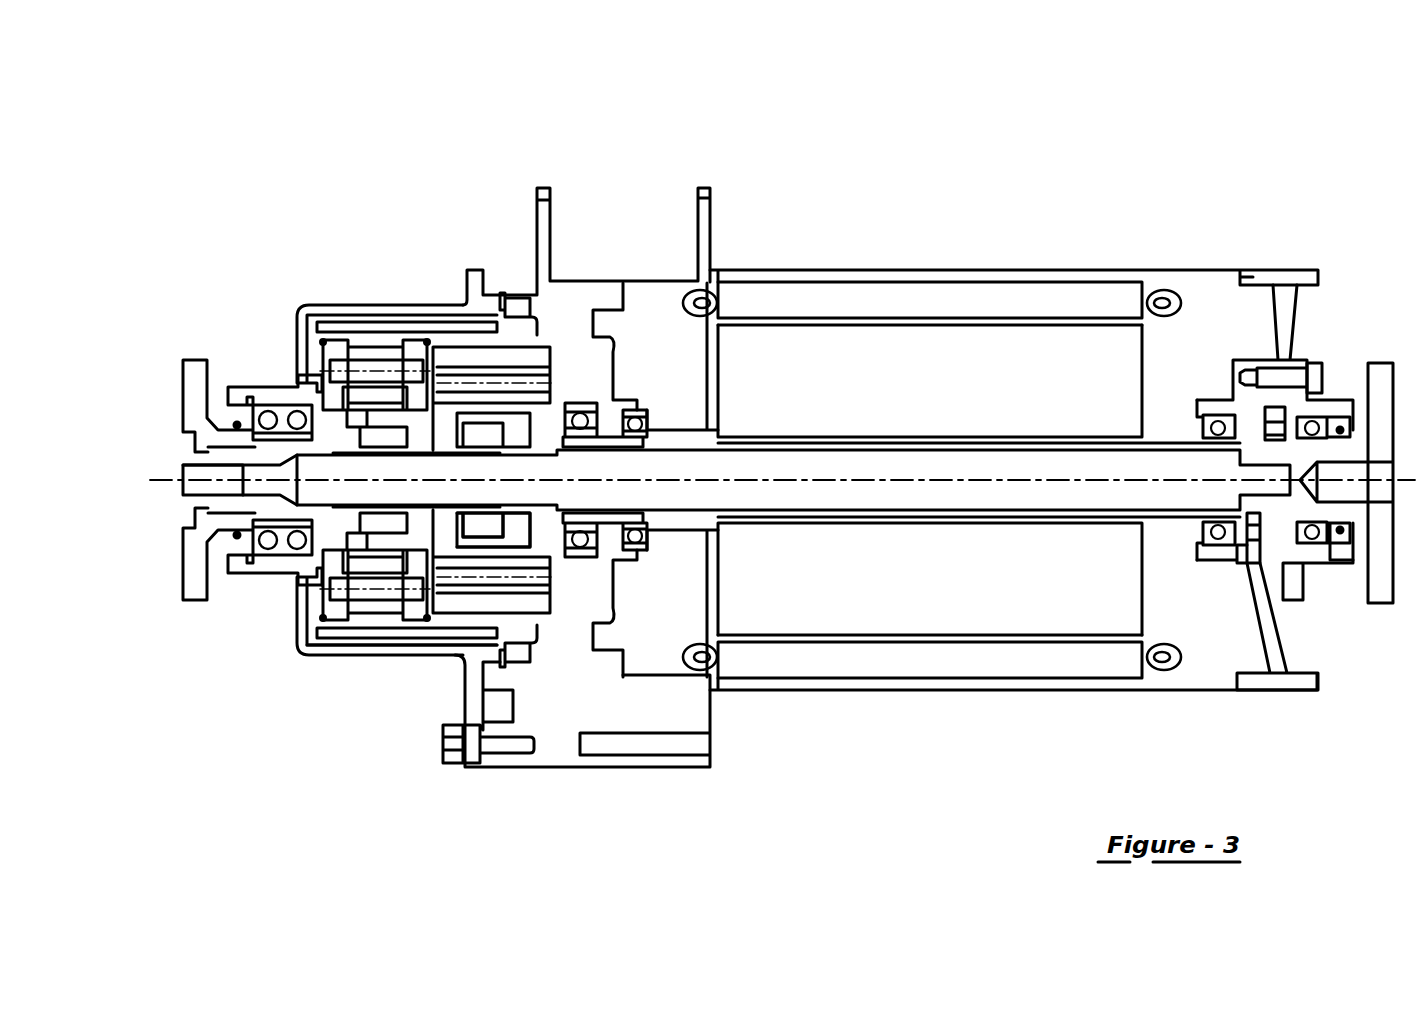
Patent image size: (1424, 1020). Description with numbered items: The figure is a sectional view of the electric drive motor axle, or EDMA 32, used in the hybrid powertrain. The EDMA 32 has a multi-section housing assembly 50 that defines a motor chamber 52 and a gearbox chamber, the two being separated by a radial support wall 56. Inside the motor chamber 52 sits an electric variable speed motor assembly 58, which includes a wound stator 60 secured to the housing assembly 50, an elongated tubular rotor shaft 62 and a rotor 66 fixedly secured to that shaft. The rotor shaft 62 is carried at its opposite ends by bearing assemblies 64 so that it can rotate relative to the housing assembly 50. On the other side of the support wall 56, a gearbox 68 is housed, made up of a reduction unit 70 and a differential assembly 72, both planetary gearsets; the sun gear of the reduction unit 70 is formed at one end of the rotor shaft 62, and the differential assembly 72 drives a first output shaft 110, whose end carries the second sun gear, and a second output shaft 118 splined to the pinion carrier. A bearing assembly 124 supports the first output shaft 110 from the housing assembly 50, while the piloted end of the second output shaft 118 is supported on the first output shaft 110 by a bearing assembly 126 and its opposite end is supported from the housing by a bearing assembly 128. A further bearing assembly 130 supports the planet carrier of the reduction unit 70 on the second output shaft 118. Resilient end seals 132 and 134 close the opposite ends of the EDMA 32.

The electric drive motor axle 32 is at (1064, 156).
The multi-section housing assembly 50 is at (1211, 265).
The motor chamber 52 is at (1203, 690).
The radial support wall 56 is at (603, 350).
The electric variable speed motor assembly 58 is at (845, 288).
The wound stator 60 is at (1003, 282).
The rotor shaft 62 is at (810, 440).
The bearing assemblies 64 is at (641, 411).
The rotor 66 is at (1122, 360).
The gearbox 68 is at (383, 658).
The reduction unit 70 is at (563, 362).
The differential assembly 72 is at (315, 590).
The first output shaft 110 is at (232, 493).
The second output shaft 118 is at (900, 463).
The bearing assembly 124 is at (272, 418).
The bearing assembly 126 is at (243, 465).
The bearing assembly 128 is at (1273, 563).
The bearing assembly 130 is at (433, 513).
The resilient end seal 132 is at (220, 418).
The resilient end seal 134 is at (1360, 427).